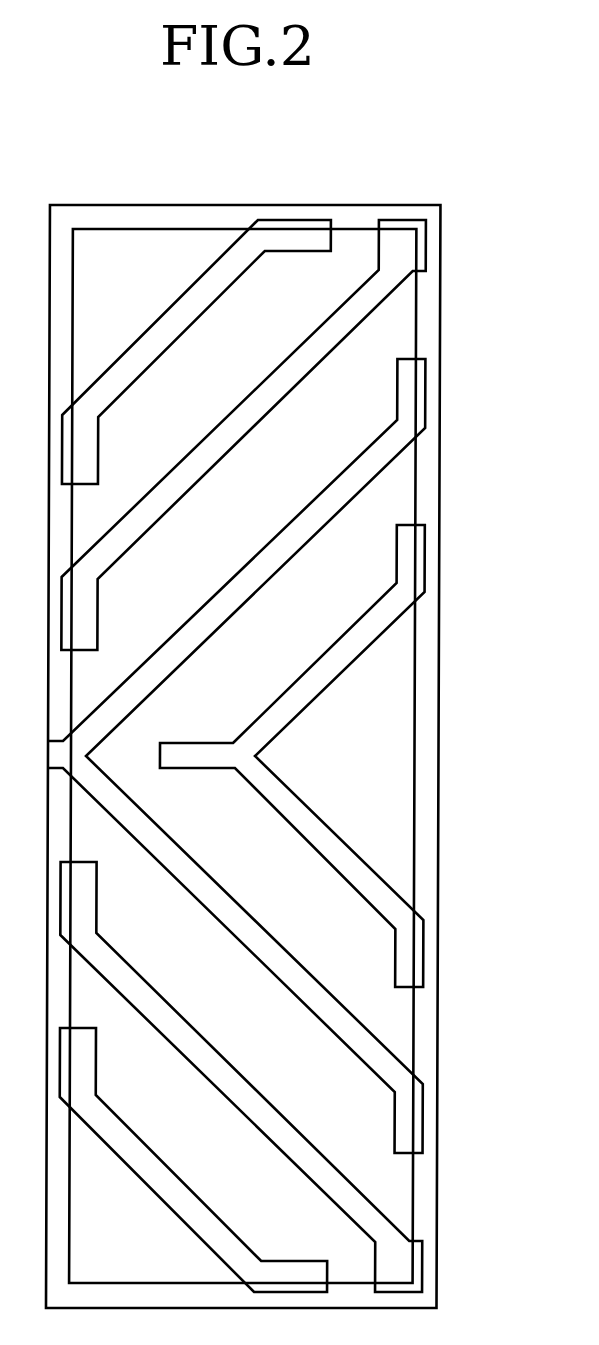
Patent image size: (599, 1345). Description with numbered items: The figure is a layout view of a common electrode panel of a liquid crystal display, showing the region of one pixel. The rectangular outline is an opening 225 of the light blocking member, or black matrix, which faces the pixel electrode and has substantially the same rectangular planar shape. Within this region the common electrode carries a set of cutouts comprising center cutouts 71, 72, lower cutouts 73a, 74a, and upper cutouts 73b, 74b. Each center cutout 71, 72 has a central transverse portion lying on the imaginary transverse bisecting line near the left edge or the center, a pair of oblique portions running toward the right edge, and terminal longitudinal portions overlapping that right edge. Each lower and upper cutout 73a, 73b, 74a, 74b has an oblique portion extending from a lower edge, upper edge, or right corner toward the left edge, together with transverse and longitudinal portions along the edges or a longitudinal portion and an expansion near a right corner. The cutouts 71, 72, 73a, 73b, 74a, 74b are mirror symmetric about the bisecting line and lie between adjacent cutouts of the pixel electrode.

The center cutout 71 is at (342, 684).
The center cutout 72 is at (257, 602).
The lower cutout 73a is at (198, 1080).
The upper cutout 73b is at (295, 398).
The lower cutout 74a is at (138, 1187).
The upper cutout 74b is at (200, 326).
The opening 225 is at (415, 753).